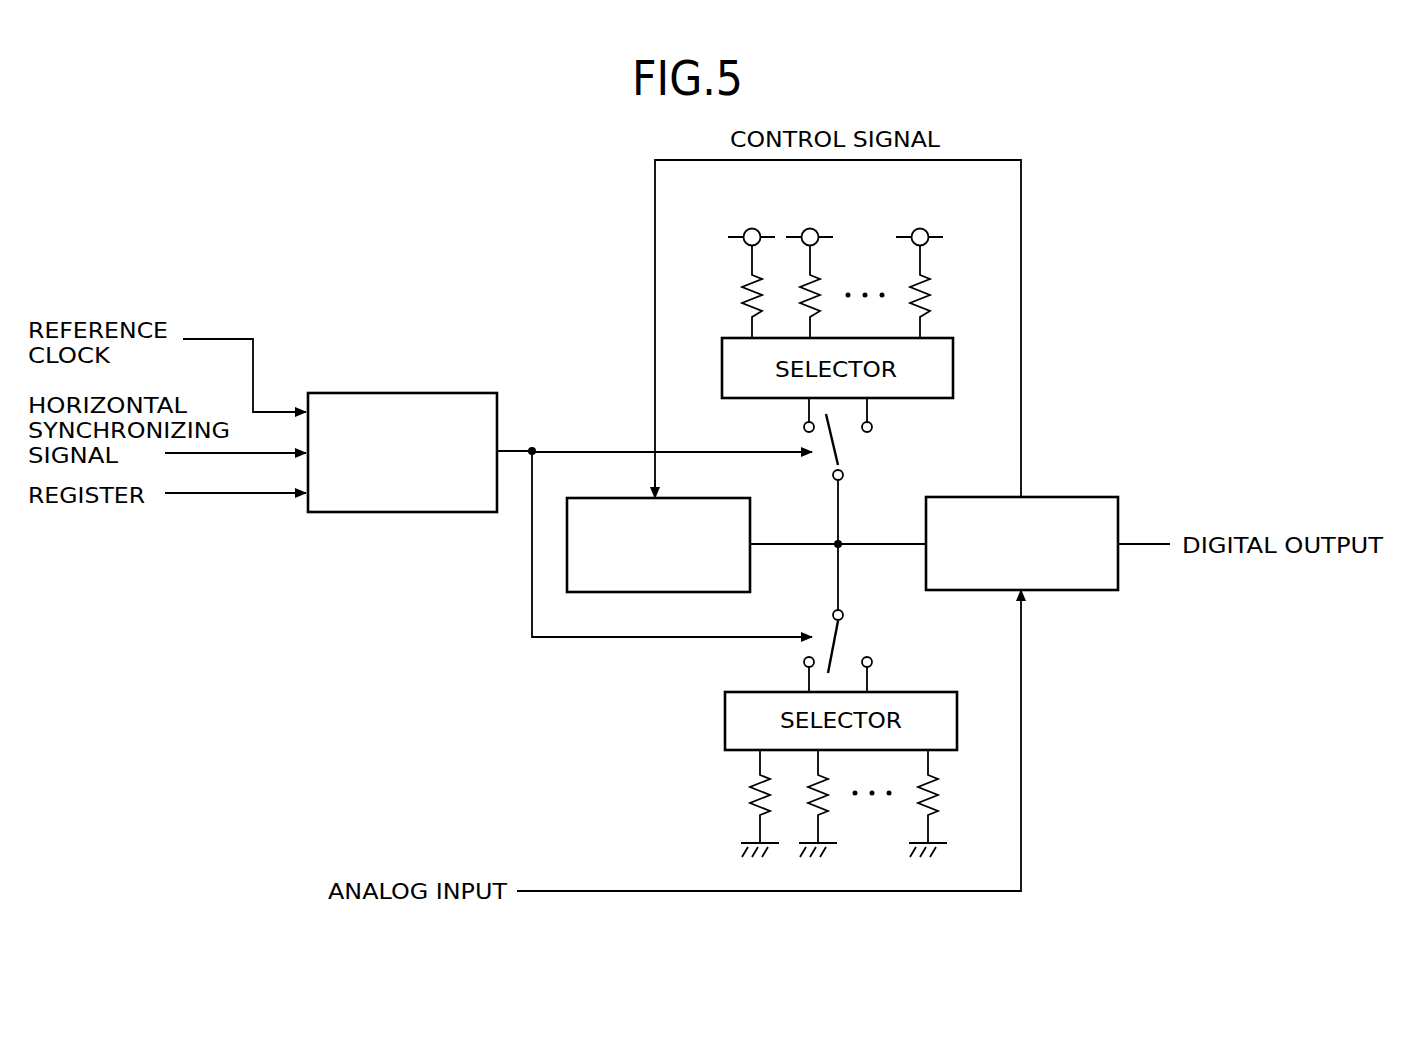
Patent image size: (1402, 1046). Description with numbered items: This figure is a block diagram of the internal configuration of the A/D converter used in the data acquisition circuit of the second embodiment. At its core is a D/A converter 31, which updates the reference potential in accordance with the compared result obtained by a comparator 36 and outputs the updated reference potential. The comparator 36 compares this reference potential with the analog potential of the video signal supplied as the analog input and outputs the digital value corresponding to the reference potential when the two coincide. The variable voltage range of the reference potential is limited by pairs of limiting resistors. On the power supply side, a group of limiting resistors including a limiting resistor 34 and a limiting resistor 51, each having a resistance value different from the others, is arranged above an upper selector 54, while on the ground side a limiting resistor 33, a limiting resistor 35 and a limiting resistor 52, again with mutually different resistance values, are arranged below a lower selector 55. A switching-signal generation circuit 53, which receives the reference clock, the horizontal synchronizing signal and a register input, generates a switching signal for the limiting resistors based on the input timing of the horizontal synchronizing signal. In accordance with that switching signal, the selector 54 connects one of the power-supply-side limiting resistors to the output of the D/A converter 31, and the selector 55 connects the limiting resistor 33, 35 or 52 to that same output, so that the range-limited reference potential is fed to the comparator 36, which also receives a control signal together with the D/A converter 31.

The D/A converter 31 is at (735, 296).
The limiting resistor 33 is at (737, 797).
The limiting resistor 34 is at (823, 279).
The limiting resistor 35 is at (833, 805).
The comparator 36 is at (1069, 495).
The limiting resistor 51 is at (936, 296).
The limiting resistor 52 is at (944, 792).
The switching-signal generation circuit 53 is at (401, 392).
The selector 54 is at (853, 453).
The selector 55 is at (853, 635).